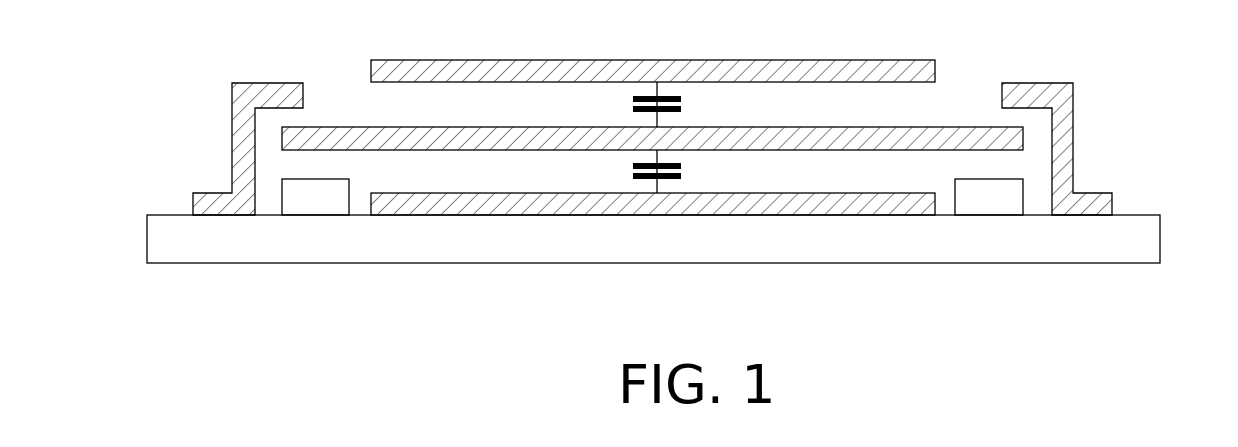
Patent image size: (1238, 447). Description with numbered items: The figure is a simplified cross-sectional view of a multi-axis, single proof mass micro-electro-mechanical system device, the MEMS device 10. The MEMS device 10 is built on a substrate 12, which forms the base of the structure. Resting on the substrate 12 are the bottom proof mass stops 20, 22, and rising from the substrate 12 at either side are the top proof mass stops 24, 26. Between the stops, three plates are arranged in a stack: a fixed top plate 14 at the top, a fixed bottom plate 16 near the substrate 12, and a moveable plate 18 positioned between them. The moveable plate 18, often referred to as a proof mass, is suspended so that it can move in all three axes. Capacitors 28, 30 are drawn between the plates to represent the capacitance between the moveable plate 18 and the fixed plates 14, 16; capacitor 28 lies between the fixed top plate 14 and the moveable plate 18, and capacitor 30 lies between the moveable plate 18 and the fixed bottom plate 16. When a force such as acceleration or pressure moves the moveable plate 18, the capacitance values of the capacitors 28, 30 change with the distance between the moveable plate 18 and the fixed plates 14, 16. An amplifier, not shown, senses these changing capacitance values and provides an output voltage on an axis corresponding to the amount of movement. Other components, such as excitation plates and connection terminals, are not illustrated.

The MEMS device 10 is at (1018, 292).
The substrate 12 is at (1160, 236).
The fixed top plate 14 is at (788, 60).
The fixed bottom plate 16 is at (840, 193).
The moveable plate 18 is at (808, 127).
The bottom proof mass stop 20 is at (331, 209).
The bottom proof mass stop 22 is at (1004, 209).
The top proof mass stop 24 is at (268, 83).
The top proof mass stop 26 is at (1038, 83).
The capacitor 28 is at (633, 109).
The capacitor 30 is at (633, 177).